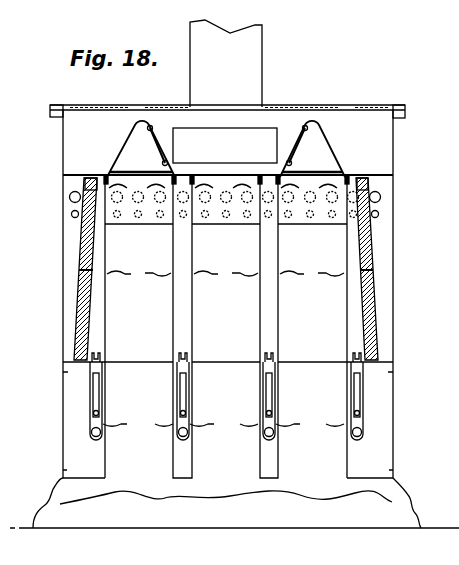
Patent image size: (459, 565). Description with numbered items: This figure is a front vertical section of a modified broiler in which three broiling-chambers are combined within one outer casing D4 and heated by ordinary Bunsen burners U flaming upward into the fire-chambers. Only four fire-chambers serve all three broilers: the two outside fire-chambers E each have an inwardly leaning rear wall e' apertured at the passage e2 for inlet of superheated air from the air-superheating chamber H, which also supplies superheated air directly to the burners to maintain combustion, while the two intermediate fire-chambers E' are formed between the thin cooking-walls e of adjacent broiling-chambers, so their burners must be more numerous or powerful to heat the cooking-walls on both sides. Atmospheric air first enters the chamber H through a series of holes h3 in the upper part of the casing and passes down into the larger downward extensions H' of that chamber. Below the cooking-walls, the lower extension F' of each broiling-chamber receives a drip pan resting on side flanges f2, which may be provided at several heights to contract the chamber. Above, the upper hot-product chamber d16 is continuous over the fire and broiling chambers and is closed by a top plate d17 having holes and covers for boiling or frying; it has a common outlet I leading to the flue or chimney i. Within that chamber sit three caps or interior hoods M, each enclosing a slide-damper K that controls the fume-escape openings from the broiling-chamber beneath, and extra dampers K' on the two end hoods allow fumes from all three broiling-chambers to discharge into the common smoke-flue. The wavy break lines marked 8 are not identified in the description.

The flue or chimney i is at (226, 63).
The top plate d17 is at (138, 103).
The outer casing D4 is at (63, 142).
The upper hot-product chamber d16 is at (228, 151).
The cap or interior hood M is at (122, 144).
The extra damper K' is at (228, 142).
The slide-damper K is at (226, 164).
The common outlet I is at (225, 145).
The rear wall e' is at (229, 253).
The fire-chamber E is at (226, 269).
The passage e2 is at (80, 270).
The air-superheating chamber H is at (225, 273).
The lower extension of the broiling-chamber F' is at (228, 326).
The intermediate fire-chamber E' is at (226, 327).
The cooking-wall e is at (226, 243).
The holes h3 is at (71, 213).
The section line 8 is at (225, 230).
The Bunsen burner U is at (90, 393).
The flange f2 is at (223, 427).
The downward extension of the air-superheating chamber H' is at (228, 462).